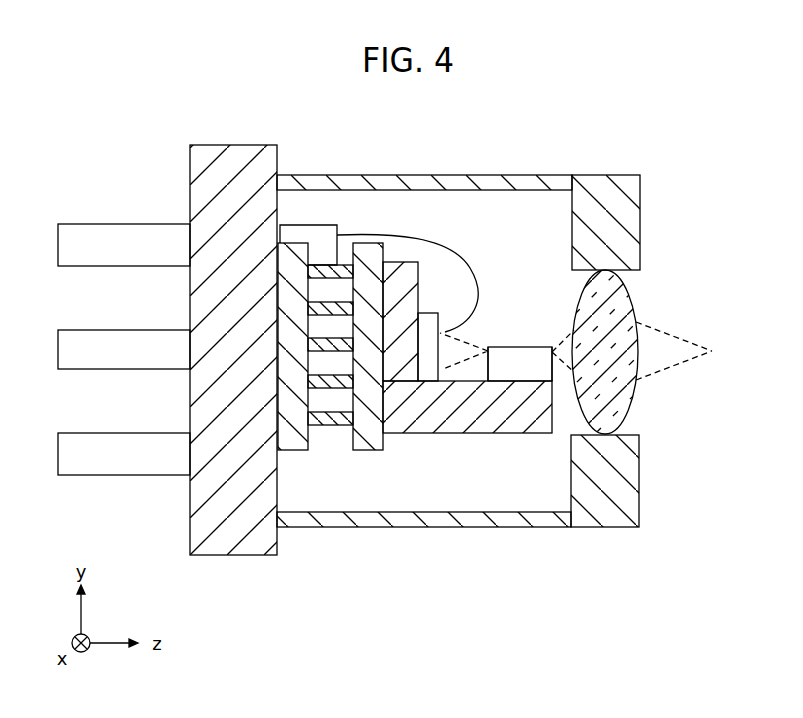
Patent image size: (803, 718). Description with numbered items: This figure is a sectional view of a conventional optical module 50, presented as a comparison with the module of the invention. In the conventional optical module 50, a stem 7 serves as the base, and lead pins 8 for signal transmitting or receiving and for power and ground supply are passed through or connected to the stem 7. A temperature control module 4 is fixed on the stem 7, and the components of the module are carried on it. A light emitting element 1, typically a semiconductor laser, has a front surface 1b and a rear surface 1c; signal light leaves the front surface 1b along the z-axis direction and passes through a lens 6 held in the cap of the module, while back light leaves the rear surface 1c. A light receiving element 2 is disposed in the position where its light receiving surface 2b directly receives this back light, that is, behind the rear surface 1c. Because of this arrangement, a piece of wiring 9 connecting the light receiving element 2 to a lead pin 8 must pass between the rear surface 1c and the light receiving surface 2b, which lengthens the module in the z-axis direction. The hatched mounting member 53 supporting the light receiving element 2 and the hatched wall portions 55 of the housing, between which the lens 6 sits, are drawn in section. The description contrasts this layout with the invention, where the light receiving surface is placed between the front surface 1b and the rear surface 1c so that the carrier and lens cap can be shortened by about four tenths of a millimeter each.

The conventional optical module 50 is at (172, 105).
The stem 7 is at (212, 555).
The lead pin 8 is at (80, 237).
The wiring 9 is at (423, 238).
The temperature control module 4 is at (380, 453).
The mounting plate 53 is at (386, 433).
The light receiving element 2 is at (431, 365).
The light receiving surface 2b is at (440, 333).
The light emitting element 1 is at (528, 355).
The front surface 1b is at (552, 352).
The rear surface 1c is at (488, 345).
The lens 6 is at (628, 417).
The housing wall 55 is at (612, 182).